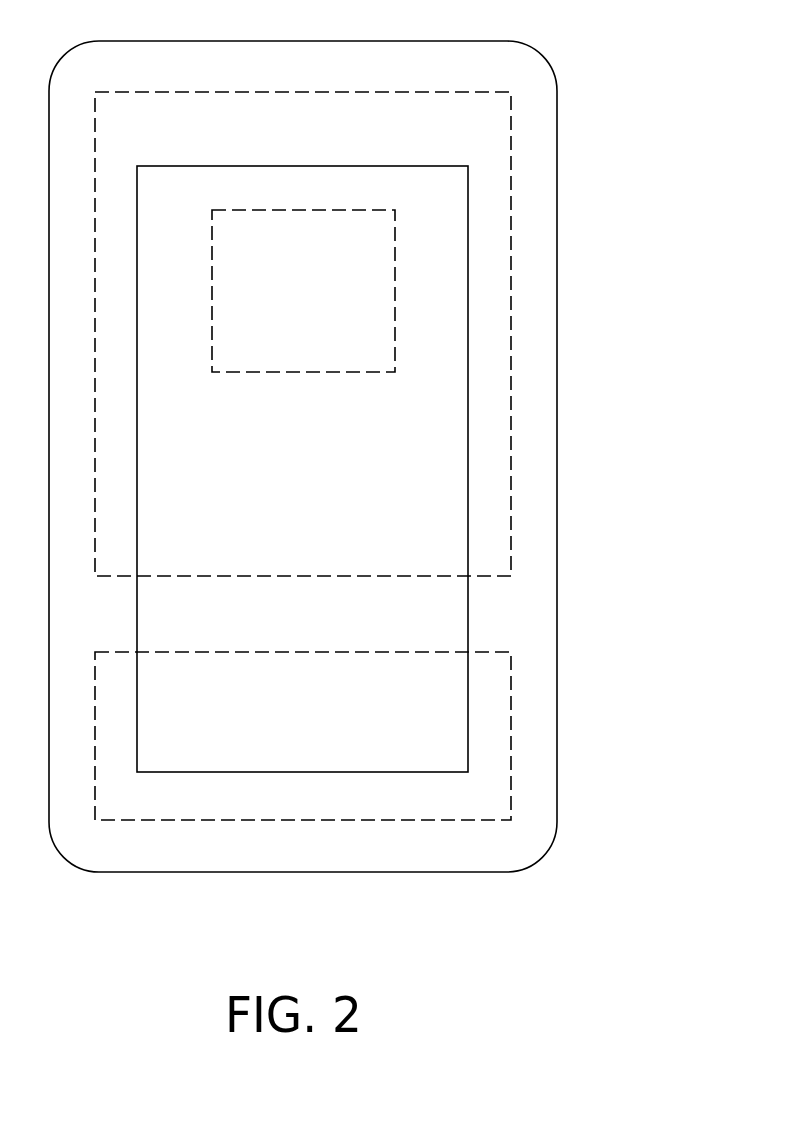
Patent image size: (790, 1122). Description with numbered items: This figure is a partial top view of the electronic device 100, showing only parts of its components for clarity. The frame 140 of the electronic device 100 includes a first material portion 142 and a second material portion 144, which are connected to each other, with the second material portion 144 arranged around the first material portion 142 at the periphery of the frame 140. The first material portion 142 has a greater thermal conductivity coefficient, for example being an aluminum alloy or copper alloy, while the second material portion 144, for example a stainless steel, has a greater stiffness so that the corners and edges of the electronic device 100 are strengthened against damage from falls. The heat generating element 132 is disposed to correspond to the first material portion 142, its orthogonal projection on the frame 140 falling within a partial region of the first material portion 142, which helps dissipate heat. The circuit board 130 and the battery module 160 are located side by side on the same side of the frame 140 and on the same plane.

The electronic device 100 is at (657, 940).
The circuit board 130 is at (511, 145).
The heat generating element 132 is at (395, 263).
The frame 140 is at (643, 300).
The first material portion 142 is at (444, 447).
The second material portion 144 is at (536, 351).
The battery module 160 is at (511, 747).